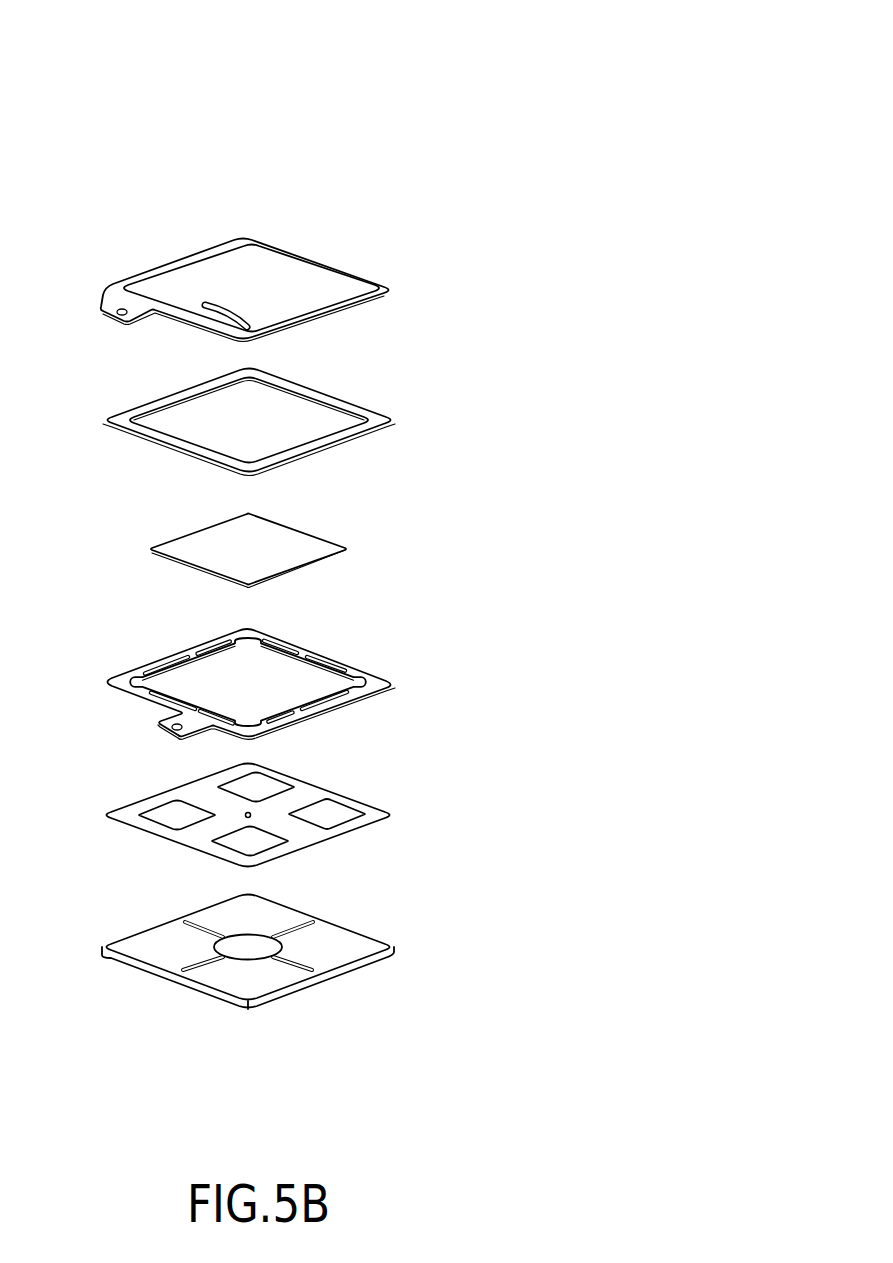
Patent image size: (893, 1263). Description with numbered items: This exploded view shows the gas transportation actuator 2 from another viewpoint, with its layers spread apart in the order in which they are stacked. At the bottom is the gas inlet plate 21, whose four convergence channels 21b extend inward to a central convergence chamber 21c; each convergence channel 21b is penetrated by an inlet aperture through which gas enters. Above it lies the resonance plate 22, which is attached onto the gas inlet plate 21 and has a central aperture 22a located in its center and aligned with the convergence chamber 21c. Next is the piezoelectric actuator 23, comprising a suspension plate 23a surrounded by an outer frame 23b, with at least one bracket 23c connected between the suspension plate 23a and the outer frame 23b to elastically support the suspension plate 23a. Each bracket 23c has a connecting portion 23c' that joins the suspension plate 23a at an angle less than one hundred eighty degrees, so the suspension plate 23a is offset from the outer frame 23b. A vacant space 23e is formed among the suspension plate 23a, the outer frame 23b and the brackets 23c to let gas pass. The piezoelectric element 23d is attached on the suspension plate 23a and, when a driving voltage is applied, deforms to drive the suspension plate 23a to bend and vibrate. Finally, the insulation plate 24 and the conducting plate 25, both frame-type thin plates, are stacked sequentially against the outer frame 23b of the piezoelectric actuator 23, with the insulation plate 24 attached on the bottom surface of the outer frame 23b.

The gas transportation actuator 2 is at (585, 36).
The gas inlet plate 21 is at (289, 931).
The convergence channel 21b is at (198, 960).
The convergence chamber 21c is at (227, 937).
The resonance plate 22 is at (309, 800).
The central aperture 22a is at (247, 811).
The piezoelectric actuator 23 is at (333, 627).
The suspension plate 23a is at (302, 653).
The outer frame 23b is at (375, 677).
The bracket 23c is at (373, 703).
The connecting portion 23c' is at (262, 654).
The piezoelectric element 23d is at (340, 528).
The vacant space 23e is at (267, 630).
The insulation plate 24 is at (386, 383).
The conducting plate 25 is at (387, 258).